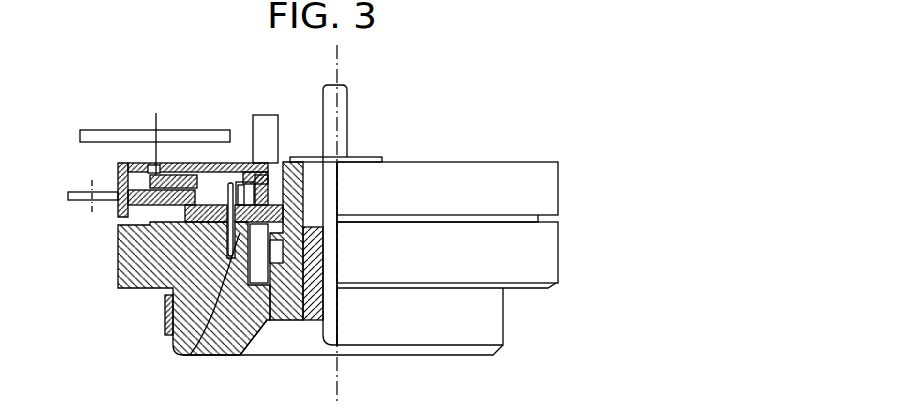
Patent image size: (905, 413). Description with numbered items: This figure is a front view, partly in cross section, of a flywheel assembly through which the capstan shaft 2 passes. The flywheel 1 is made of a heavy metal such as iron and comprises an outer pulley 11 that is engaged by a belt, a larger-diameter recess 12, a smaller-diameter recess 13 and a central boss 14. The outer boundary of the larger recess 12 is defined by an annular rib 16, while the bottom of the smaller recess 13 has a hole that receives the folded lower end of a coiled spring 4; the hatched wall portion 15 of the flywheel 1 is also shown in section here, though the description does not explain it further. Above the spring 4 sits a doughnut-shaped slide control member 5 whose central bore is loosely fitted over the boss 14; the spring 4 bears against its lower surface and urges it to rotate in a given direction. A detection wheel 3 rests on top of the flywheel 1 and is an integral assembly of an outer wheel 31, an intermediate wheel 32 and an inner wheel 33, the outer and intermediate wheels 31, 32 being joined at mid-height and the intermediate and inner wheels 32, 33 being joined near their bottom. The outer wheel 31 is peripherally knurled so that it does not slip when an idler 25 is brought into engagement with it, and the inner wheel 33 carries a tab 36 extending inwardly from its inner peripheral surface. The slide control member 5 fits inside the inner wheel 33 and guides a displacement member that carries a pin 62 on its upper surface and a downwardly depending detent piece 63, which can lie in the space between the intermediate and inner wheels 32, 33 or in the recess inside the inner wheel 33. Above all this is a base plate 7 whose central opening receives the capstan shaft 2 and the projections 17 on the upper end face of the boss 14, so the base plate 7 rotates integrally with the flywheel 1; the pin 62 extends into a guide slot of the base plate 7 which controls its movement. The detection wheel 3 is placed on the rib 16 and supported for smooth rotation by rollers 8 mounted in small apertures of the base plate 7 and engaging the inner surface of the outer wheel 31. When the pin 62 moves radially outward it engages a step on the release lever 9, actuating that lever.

The flywheel 1 is at (566, 258).
The capstan shaft 2 is at (348, 108).
The detection wheel 3 is at (566, 194).
The coiled spring 4 is at (278, 282).
The slide control member 5 is at (168, 322).
The base plate 7 is at (140, 163).
The rollers 8 is at (175, 163).
The release lever 9 is at (83, 130).
The outer pulley 11 is at (504, 331).
The recess 12 is at (197, 208).
The recess 13 is at (190, 355).
The central boss 14 is at (290, 188).
The wall 15 is at (245, 300).
The annular rib 16 is at (155, 207).
The projections 17 is at (298, 162).
The idler 25 is at (80, 198).
The outer wheel 31 is at (118, 172).
The intermediate wheel 32 is at (200, 166).
The inner wheel 33 is at (222, 177).
The tab 36 is at (228, 250).
The pin 62 is at (266, 130).
The detent piece 63 is at (244, 173).